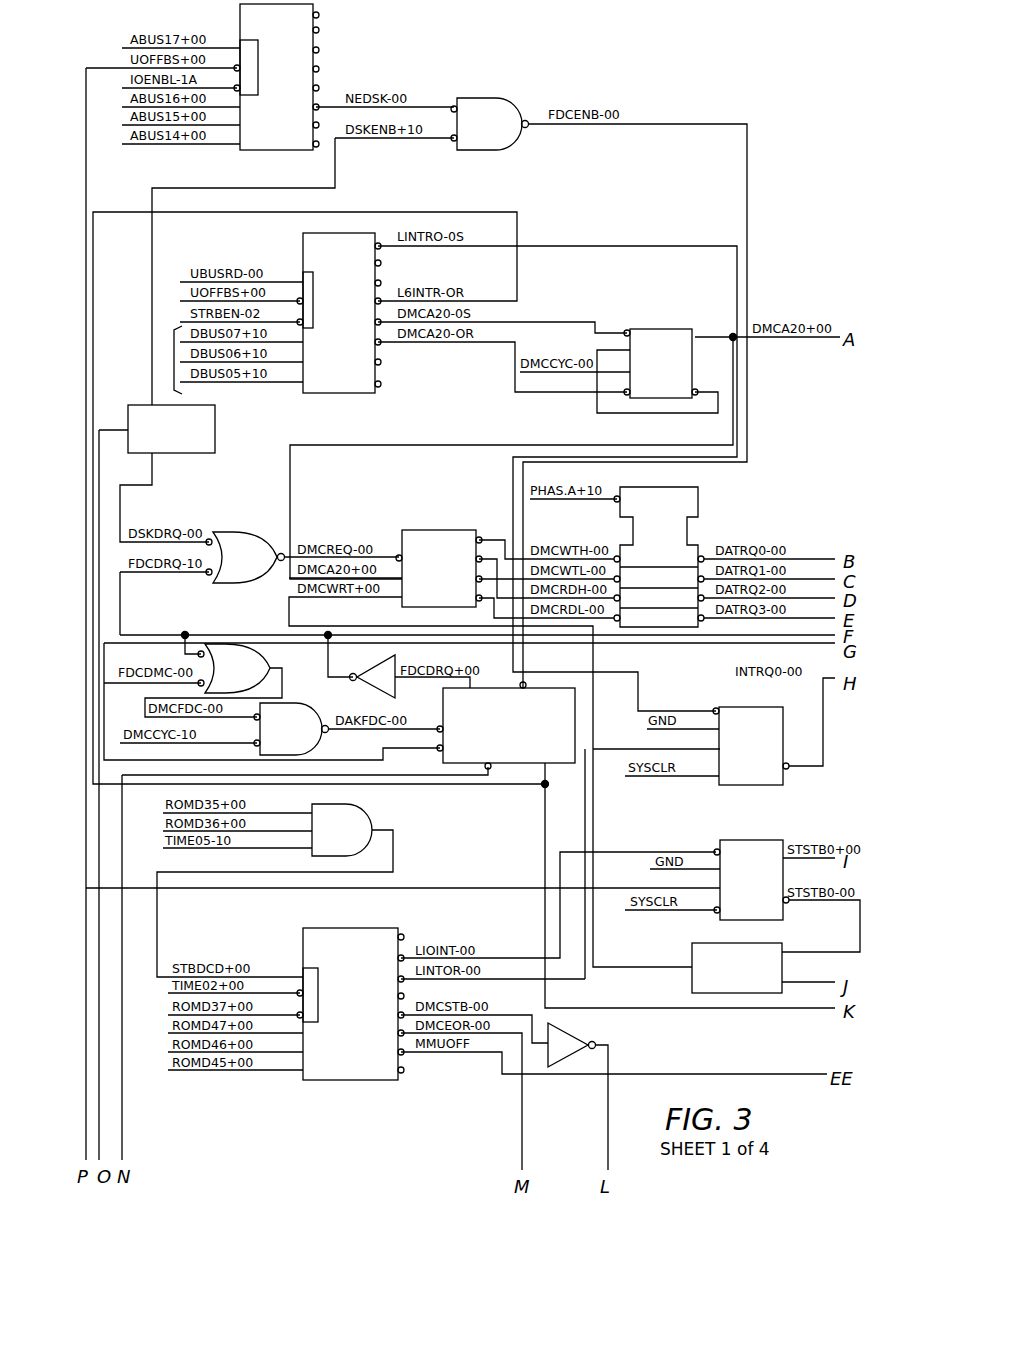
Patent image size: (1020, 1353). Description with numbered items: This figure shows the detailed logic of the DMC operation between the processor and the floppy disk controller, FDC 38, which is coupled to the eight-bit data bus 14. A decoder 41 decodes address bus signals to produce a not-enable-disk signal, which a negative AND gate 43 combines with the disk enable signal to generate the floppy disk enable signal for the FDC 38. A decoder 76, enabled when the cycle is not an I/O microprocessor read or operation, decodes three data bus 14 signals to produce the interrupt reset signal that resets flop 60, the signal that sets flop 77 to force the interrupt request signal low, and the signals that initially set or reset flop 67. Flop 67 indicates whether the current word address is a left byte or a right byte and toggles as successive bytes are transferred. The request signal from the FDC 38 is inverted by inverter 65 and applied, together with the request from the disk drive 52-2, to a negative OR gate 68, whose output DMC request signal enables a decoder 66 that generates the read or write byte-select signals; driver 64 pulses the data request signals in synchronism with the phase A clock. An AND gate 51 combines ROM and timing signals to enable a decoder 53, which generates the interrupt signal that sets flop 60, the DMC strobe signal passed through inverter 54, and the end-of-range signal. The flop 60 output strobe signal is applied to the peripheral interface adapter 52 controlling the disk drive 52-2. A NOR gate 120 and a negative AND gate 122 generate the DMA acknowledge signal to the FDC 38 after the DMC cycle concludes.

The decoder 41 is at (240, 12).
The negative AND gate 43 is at (478, 98).
The decoder 76 is at (303, 242).
The data bus 14 is at (172, 342).
The disk drive 52-2 is at (209, 408).
The flop 67 is at (655, 328).
The driver 64 is at (695, 487).
The negative OR gate 68 is at (232, 532).
The decoder 66 is at (451, 530).
The NOR gate 120 is at (254, 647).
The inverter 65 is at (382, 668).
The negative AND gate 122 is at (288, 702).
The FDC 38 is at (443, 692).
The flop 77 is at (756, 707).
The AND gate 51 is at (364, 807).
The flop 60 is at (750, 840).
The peripheral interface adapter 52 is at (770, 943).
The decoder 53 is at (368, 928).
The inverter 54 is at (575, 1030).